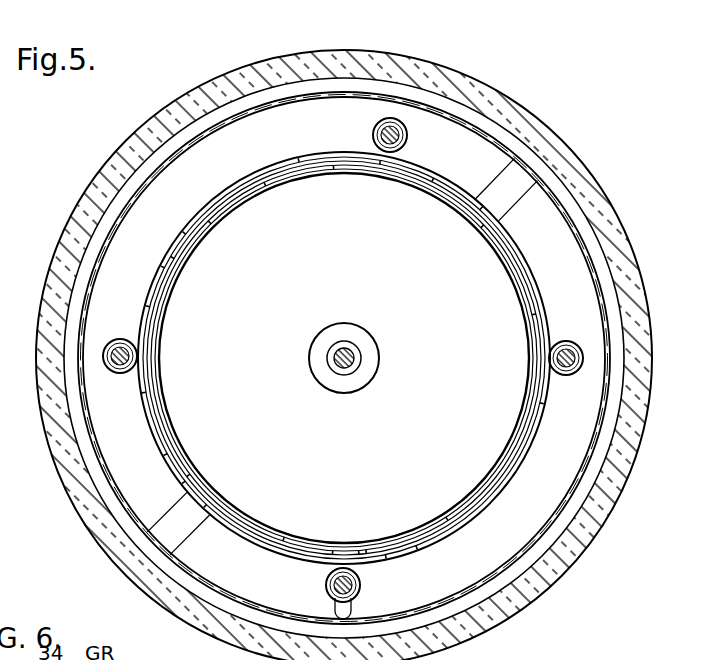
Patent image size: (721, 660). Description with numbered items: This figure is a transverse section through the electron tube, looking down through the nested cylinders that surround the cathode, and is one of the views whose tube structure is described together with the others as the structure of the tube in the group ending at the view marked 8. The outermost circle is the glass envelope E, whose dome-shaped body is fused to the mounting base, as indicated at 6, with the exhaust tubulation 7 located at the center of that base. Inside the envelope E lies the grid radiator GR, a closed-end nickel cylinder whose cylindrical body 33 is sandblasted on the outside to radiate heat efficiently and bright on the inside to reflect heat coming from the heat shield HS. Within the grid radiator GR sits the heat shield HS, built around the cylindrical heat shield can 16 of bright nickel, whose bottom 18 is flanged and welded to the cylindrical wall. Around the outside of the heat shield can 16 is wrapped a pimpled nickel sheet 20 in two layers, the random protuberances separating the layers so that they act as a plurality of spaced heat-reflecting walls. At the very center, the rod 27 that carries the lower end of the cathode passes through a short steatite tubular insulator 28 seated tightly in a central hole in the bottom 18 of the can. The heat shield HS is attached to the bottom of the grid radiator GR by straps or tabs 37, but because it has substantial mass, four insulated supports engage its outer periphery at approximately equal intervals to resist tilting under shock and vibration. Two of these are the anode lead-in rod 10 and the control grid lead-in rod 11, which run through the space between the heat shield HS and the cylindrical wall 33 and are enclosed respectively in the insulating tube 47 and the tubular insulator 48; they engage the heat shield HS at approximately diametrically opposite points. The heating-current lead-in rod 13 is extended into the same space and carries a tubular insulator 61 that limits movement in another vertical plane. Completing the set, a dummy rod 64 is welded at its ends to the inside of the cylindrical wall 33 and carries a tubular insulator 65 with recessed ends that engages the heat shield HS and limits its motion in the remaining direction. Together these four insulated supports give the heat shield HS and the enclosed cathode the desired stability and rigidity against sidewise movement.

The glass envelope E is at (636, 416).
The cylindrical body 33 is at (538, 538).
The grid radiator GR is at (344, 358).
The heat shield can 16 is at (198, 240).
The bottom end of heat shield can 18 is at (344, 358).
The pimpled nickel sheet 20 is at (176, 260).
The heat shield HS is at (344, 358).
The straps or tabs 37 is at (508, 196).
The section line 8- 8 is at (466, 232).
The fused joint 6 is at (378, 195).
The exhaust tubulation 7 is at (343, 659).
The lead-in rod for heating current 13 is at (407, 137).
The tubular insulator 61 is at (381, 132).
The insulating tube 47 is at (120, 342).
The anode lead-in rod 10 is at (119, 366).
The tubular insulator 48 is at (566, 343).
The control grid lead-in rod 11 is at (565, 369).
The dummy rod 64 is at (356, 604).
The tubular insulator 65 is at (328, 588).
The tubular insulator 28 is at (368, 332).
The rod 27 is at (354, 366).